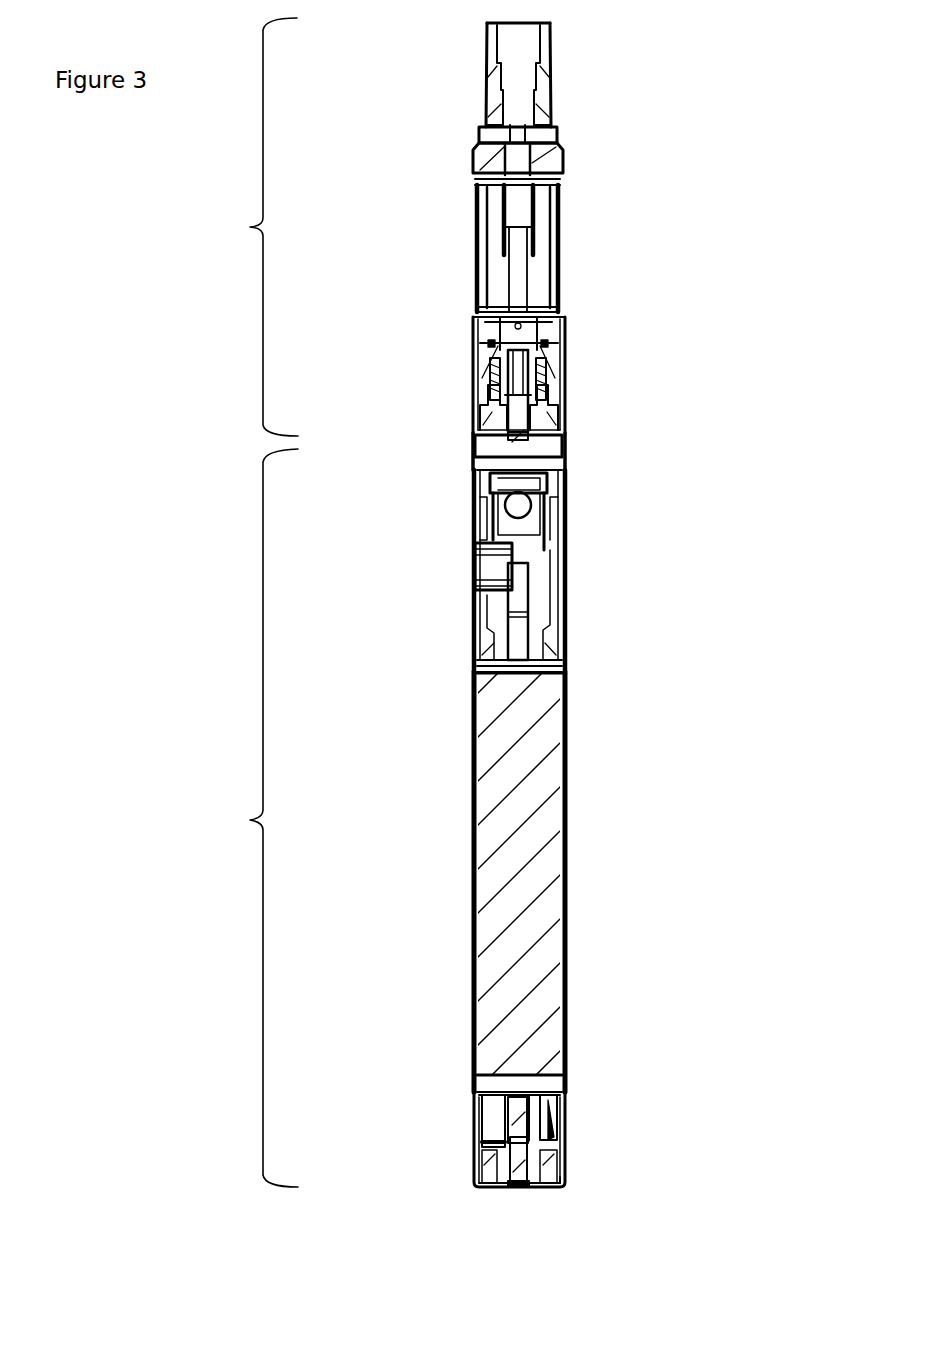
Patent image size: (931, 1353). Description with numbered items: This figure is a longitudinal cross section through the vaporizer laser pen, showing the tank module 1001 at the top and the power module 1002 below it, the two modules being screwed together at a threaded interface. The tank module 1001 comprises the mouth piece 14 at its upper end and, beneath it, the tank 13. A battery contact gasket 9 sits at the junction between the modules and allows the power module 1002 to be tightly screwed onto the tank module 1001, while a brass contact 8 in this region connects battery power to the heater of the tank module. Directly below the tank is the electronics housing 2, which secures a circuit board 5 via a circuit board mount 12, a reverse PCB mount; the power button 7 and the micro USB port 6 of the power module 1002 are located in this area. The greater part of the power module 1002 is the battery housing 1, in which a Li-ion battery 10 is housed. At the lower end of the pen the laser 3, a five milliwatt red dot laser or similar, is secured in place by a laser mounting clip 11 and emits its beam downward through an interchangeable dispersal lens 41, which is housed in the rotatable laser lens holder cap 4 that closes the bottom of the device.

The battery housing 1 is at (470, 760).
The electronics housing 2 is at (565, 445).
The laser 3 is at (487, 1190).
The laser lens holder cap 4 is at (565, 1125).
The circuit board 5 is at (540, 507).
The micro USB port 6 is at (472, 563).
The power button 7 is at (548, 481).
The contact 8 is at (545, 383).
The battery contact gasket 9 is at (496, 395).
The battery 10 is at (565, 902).
The laser mounting clip 11 is at (563, 1187).
The circuit board mount 12 is at (473, 590).
The tank 13 is at (562, 410).
The mouth piece 14 is at (492, 23).
The interchangeable dispersal lens 41 is at (522, 1187).
The tank module 1001 is at (250, 227).
The power module 1002 is at (250, 820).